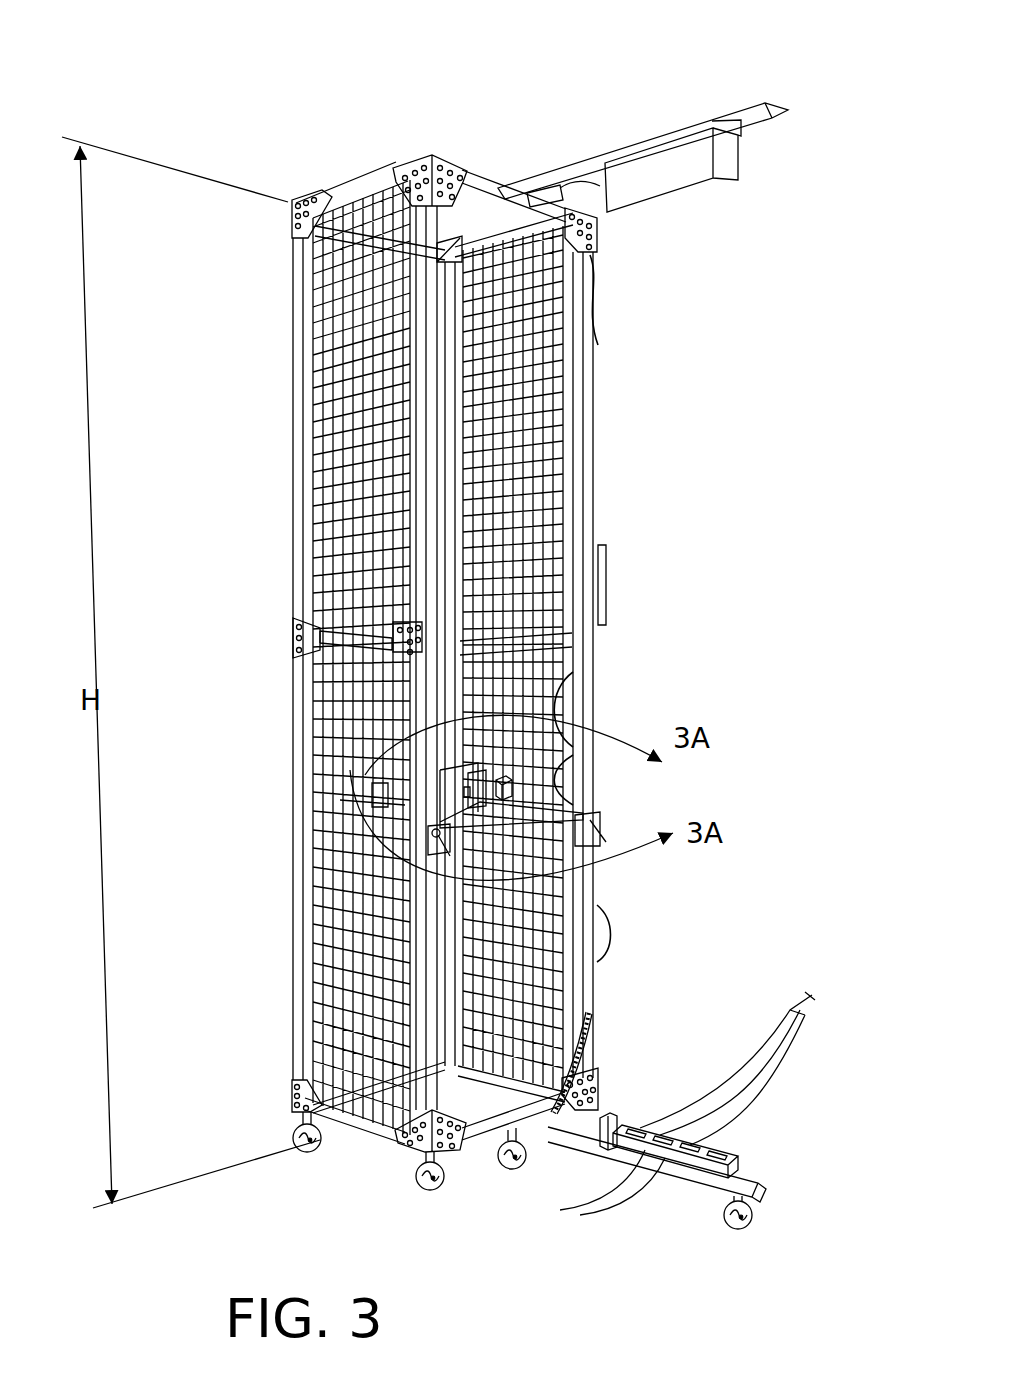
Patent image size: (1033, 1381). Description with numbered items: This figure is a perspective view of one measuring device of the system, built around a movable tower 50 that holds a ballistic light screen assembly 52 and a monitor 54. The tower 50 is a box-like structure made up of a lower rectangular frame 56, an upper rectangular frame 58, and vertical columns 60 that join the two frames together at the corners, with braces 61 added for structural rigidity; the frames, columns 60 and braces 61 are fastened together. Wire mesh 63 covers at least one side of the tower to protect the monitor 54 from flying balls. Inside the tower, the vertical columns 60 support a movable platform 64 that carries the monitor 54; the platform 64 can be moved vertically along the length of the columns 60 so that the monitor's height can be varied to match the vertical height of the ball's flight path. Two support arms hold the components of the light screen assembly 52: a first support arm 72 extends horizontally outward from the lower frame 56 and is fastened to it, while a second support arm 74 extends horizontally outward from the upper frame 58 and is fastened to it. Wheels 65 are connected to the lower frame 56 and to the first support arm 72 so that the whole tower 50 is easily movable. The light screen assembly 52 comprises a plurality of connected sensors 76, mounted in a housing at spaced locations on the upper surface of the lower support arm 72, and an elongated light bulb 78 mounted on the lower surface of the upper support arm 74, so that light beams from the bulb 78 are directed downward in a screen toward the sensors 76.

The movable tower 50 is at (502, 128).
The ballistic light screen assembly 52 is at (770, 165).
The monitor 54 is at (385, 782).
The lower rectangular frame 56 is at (355, 1125).
The upper rectangular frame 58 is at (352, 190).
The vertical columns 60 is at (302, 360).
The braces 61 is at (345, 637).
The wire mesh 63 is at (435, 818).
The movable platform 64 is at (543, 842).
The wheels 65 is at (300, 1140).
The first support arm 72 is at (712, 1188).
The second support arm 74 is at (780, 104).
The sensors 76 is at (690, 1160).
The elongated light bulb 78 is at (705, 185).